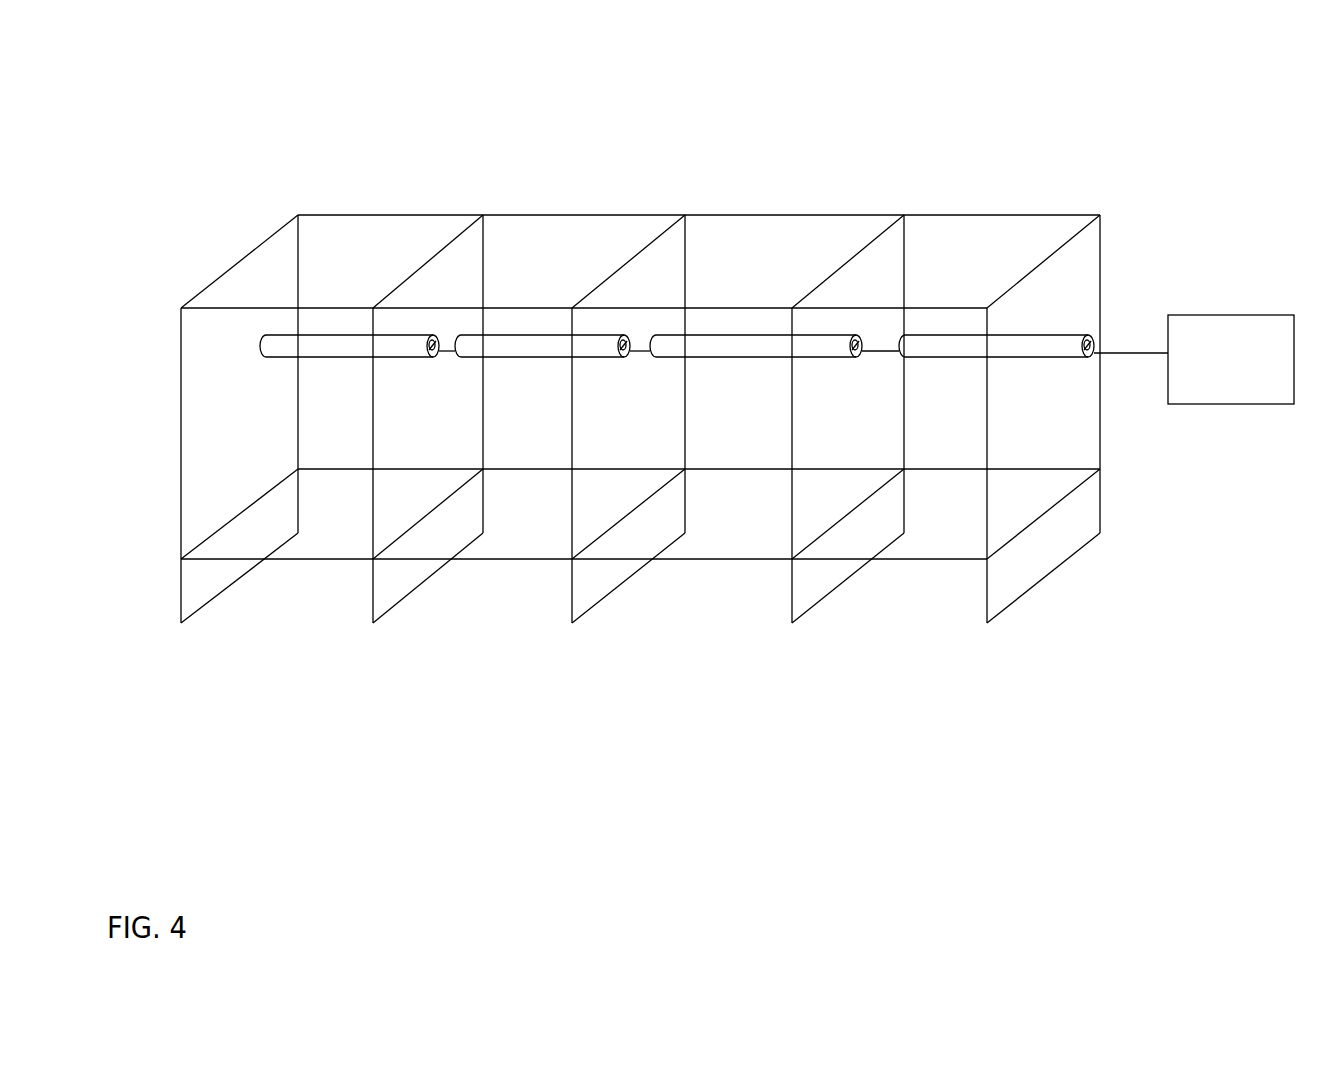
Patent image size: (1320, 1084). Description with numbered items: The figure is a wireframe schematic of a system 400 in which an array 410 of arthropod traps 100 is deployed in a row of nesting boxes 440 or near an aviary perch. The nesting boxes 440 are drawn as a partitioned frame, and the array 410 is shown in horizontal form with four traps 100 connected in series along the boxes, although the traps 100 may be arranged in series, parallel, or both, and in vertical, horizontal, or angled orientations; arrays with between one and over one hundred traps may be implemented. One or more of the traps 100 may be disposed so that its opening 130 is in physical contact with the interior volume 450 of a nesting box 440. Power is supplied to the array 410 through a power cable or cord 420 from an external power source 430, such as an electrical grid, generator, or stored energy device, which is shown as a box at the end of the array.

The system 400 is at (1113, 92).
The array 410 is at (545, 338).
The arthropod trap 100 is at (735, 338).
The opening 130 is at (858, 343).
The power cable 420 is at (1135, 354).
The external power source 430 is at (1240, 315).
The nesting boxes 440 is at (817, 215).
The interior volume 450 is at (288, 514).